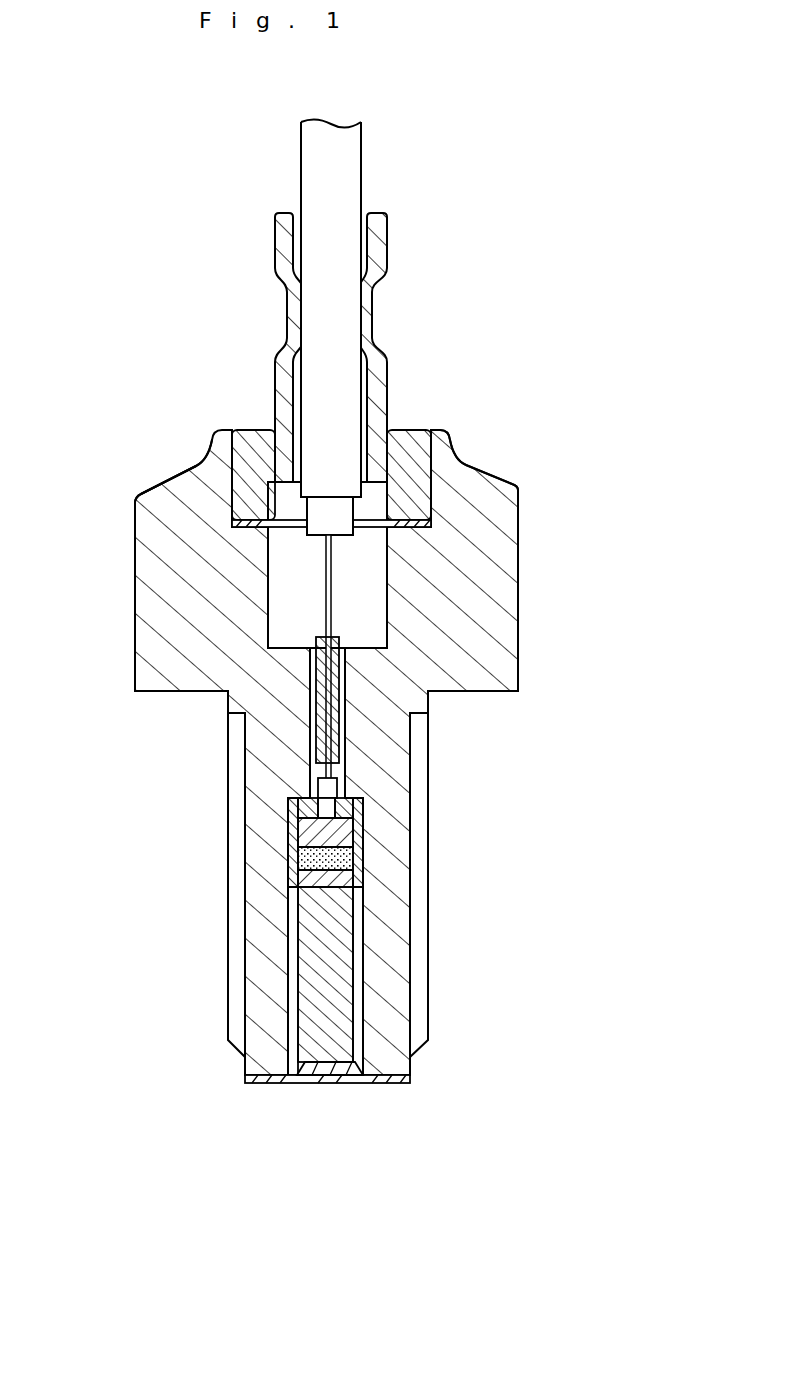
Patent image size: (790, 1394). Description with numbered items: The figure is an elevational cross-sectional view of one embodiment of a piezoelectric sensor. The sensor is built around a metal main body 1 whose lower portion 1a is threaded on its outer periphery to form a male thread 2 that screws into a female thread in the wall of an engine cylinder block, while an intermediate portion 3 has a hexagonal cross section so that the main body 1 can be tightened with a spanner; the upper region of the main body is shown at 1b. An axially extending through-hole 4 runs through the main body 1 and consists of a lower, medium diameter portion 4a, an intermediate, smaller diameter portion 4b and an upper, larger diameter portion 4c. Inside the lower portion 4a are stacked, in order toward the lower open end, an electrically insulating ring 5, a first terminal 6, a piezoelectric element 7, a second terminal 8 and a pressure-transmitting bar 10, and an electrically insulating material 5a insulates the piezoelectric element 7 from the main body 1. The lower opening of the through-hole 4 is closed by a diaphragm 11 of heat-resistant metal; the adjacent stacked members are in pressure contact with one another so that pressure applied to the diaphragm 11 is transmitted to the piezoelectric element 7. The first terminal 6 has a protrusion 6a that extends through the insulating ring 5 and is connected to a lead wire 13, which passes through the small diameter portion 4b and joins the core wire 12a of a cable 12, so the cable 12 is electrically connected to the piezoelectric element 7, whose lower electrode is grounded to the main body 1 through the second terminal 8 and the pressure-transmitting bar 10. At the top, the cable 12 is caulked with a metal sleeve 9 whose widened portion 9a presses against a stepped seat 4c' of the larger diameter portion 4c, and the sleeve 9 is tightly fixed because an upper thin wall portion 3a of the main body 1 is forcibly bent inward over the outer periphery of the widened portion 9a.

The main body 1 is at (508, 670).
The lower portion 1a is at (255, 1003).
The upper housing shoulder 1b is at (157, 500).
The male thread 2 is at (417, 822).
The intermediate portion 3 is at (135, 617).
The upper thin wall portion 3a is at (420, 430).
The through-hole 4 is at (313, 765).
The lower, medium diameter portion 4a is at (368, 933).
The intermediate, smaller diameter portion 4b is at (345, 738).
The upper, larger diameter portion 4c is at (429, 565).
The stepped seat 4c' is at (232, 531).
The electrically insulating ring 5 is at (345, 797).
The electrically insulating material 5a is at (362, 853).
The first terminal 6 is at (290, 823).
The protrusion 6a is at (345, 772).
The piezoelectric element 7 is at (287, 863).
The second terminal 8 is at (310, 890).
The metal sleeve 9 is at (385, 347).
The widened portion 9a is at (247, 457).
The pressure-transmitting bar 10 is at (347, 1027).
The diaphragm 11 is at (307, 1082).
The cable 12 is at (343, 205).
The core wire 12a is at (335, 553).
The lead wire 13 is at (333, 617).